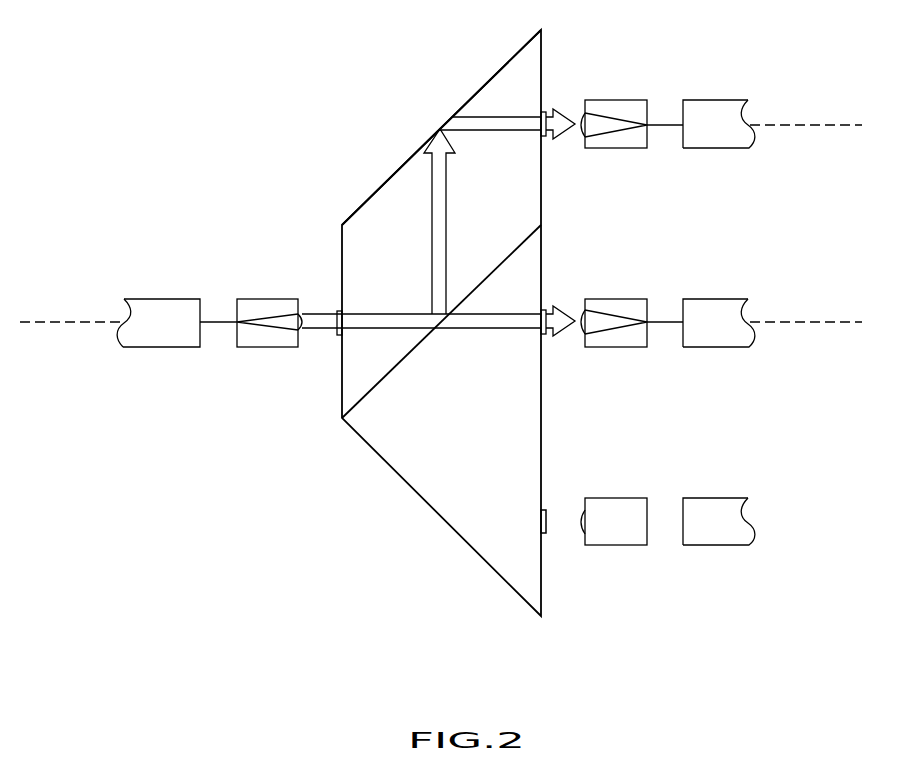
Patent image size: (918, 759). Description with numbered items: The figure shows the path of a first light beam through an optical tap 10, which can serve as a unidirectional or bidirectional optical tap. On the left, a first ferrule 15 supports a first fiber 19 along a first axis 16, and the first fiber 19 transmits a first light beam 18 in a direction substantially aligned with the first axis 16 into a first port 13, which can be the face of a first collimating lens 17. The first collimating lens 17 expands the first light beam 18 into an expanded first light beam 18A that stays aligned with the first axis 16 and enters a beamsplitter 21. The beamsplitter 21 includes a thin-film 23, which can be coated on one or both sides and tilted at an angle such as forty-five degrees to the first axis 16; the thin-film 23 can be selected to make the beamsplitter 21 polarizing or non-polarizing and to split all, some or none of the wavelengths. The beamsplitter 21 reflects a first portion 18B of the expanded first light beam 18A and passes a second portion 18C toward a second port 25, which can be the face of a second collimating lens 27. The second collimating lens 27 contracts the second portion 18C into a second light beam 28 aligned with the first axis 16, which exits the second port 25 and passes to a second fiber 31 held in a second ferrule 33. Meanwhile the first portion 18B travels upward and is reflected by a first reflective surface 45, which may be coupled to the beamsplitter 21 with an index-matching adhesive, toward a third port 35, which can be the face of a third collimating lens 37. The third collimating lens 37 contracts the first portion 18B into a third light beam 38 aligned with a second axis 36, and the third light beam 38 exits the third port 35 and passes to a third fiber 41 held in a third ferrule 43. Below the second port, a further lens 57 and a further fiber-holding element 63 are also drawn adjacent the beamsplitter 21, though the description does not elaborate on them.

The optical tap 10 is at (263, 108).
The first port 13 is at (229, 307).
The first ferrule 15 is at (140, 310).
The first axis 16 is at (50, 323).
The first collimating lens 17 is at (275, 310).
The first light beam 18 is at (220, 322).
The expanded first light beam 18A is at (384, 330).
The first portion of the expanded first light beam 18B is at (445, 216).
The second portion of the expanded first light beam 18C is at (490, 328).
The first fiber 19 is at (157, 322).
The beamsplitter 21 is at (440, 551).
The thin-film 23 is at (387, 375).
The second port 25 is at (655, 340).
The second collimating lens 27 is at (617, 305).
The second light beam 28 is at (665, 322).
The second fiber 31 is at (715, 325).
The second ferrule 33 is at (733, 335).
The third port 35 is at (655, 140).
The second axis 36 is at (813, 125).
The third collimating lens 37 is at (617, 105).
The third light beam 38 is at (665, 122).
The third fiber 41 is at (710, 128).
The third ferrule 43 is at (735, 138).
The first reflective surface 45 is at (395, 158).
The lens 57 is at (610, 537).
The detector 63 is at (732, 538).